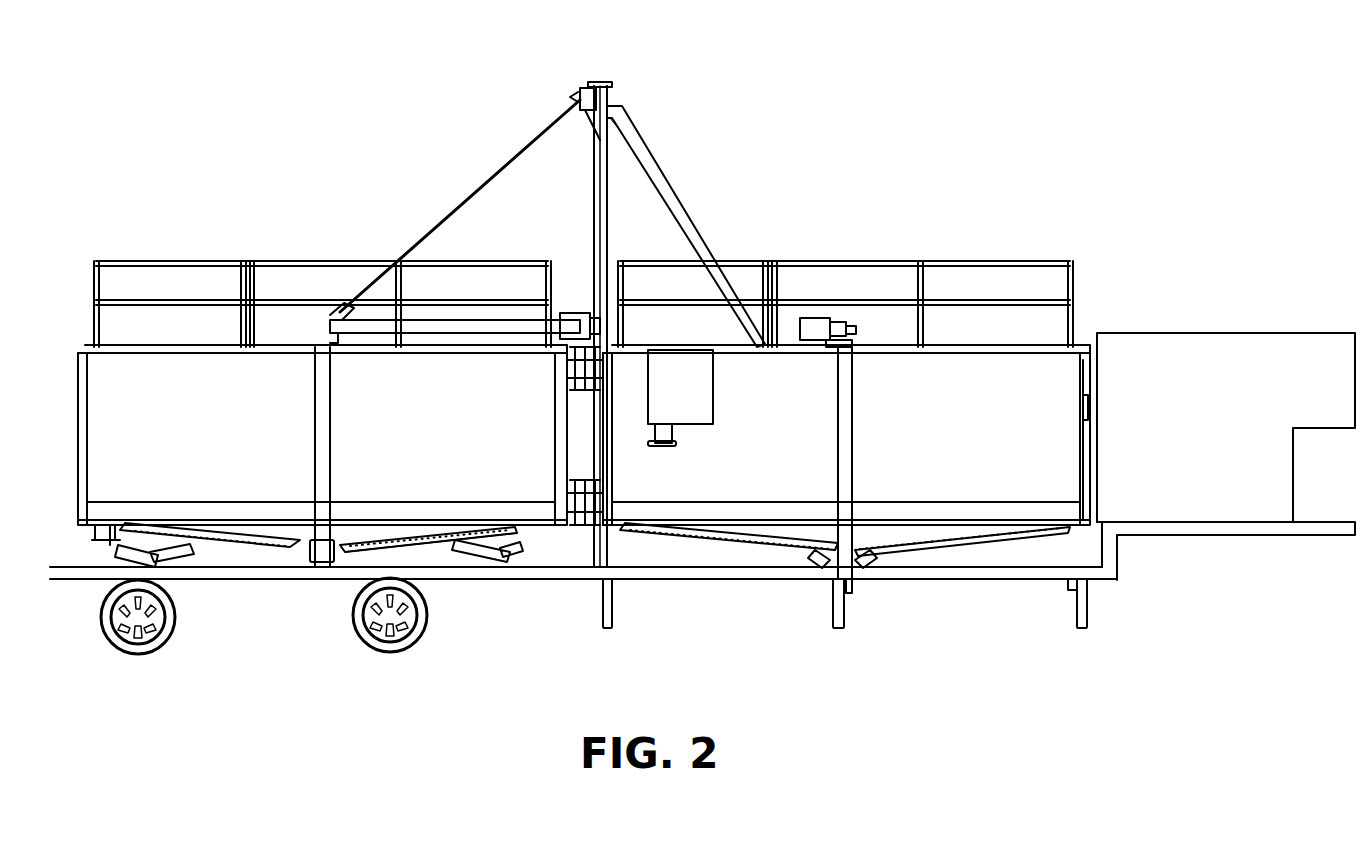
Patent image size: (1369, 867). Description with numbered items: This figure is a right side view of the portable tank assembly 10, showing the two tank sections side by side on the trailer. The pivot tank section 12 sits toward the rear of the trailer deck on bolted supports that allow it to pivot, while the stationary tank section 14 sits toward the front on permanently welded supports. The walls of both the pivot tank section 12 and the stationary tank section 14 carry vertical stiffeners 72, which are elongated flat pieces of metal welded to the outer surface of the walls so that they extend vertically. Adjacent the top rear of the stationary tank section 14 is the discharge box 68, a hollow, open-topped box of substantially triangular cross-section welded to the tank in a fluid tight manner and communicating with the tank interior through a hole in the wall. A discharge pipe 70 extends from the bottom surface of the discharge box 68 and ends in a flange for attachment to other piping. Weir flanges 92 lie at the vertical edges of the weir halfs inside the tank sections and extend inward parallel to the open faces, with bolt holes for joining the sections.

The portable tank assembly 10 is at (268, 66).
The pivot tank section 12 is at (73, 332).
The stationary tank section 14 is at (1088, 330).
The discharge box 68 is at (645, 358).
The discharge pipe 70 is at (650, 432).
The vertical stiffeners 72 is at (583, 296).
The weir flanges 92 is at (435, 505).